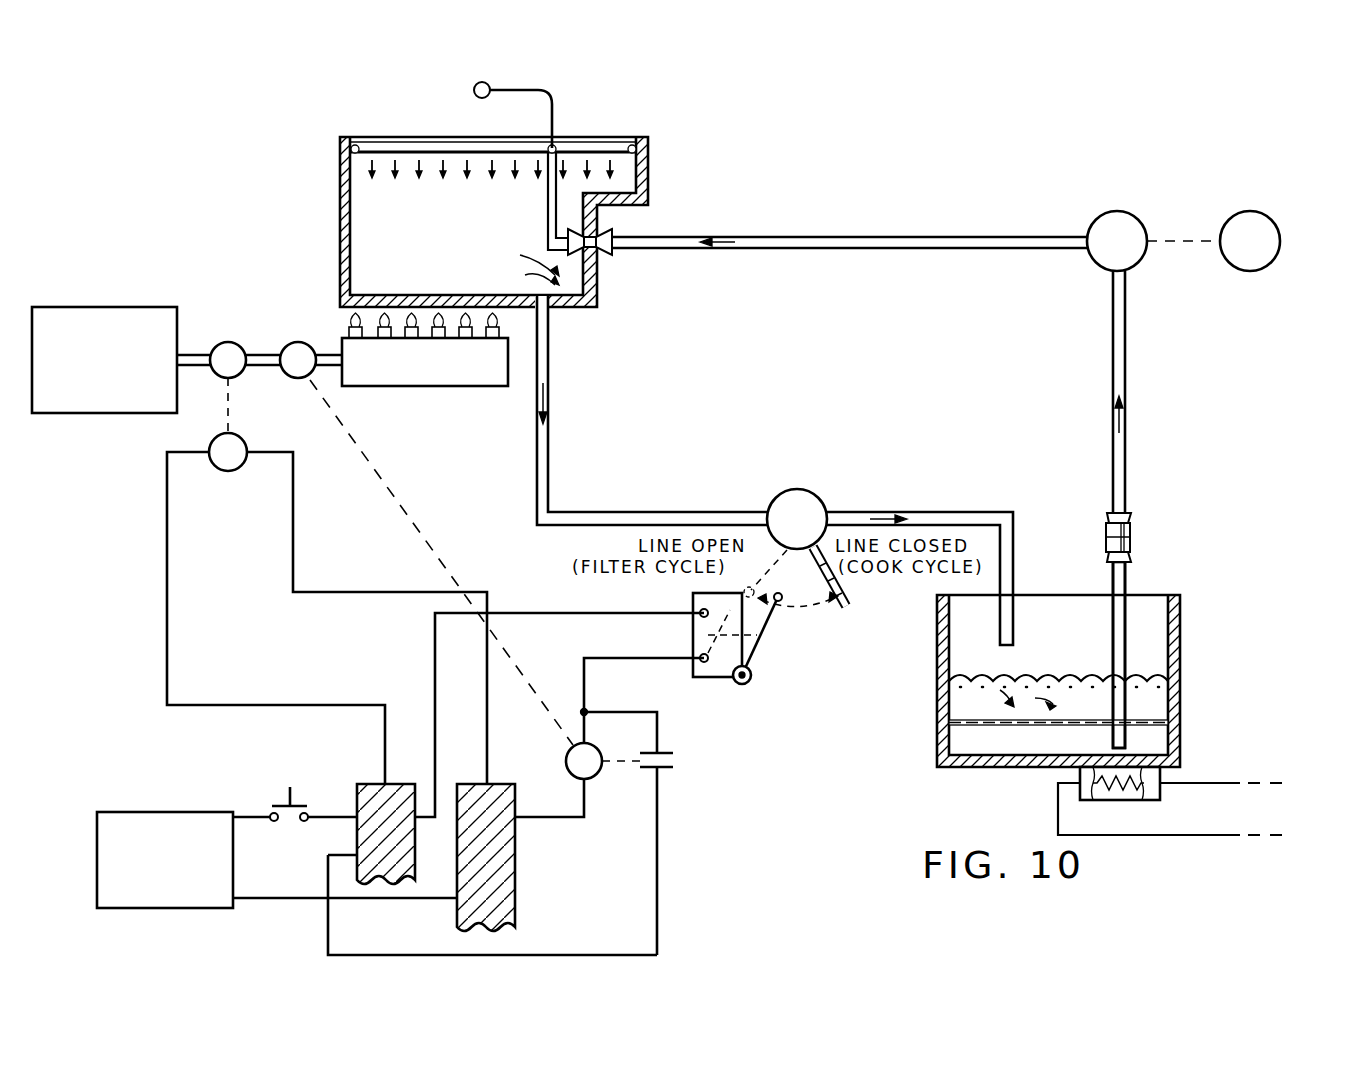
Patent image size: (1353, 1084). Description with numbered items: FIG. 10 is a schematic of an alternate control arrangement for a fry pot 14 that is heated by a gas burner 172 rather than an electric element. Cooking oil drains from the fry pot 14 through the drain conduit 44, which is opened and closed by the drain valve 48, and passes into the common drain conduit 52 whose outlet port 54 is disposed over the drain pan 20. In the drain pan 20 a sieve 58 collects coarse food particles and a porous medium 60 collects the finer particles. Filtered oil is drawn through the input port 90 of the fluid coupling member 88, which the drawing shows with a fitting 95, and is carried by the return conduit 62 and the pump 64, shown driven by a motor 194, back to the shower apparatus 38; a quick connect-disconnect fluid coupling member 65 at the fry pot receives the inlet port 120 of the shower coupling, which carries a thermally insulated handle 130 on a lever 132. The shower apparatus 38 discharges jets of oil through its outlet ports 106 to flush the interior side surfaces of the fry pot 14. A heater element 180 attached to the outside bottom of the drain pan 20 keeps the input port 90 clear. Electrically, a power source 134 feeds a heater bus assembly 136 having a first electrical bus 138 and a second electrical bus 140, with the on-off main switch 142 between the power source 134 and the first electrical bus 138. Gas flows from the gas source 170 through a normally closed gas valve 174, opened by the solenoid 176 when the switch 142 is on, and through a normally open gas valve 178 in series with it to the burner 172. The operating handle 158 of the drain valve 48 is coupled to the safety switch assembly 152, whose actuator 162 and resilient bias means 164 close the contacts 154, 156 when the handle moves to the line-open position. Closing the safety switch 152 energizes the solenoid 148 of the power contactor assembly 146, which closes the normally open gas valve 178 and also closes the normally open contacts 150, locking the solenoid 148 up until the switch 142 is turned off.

The fry pot unit 14 is at (340, 195).
The drain pan 20 is at (1181, 655).
The shower apparatus 38 is at (511, 125).
The drain conduit 44 is at (548, 393).
The drain valve 48 is at (818, 490).
The common drain conduit 52 is at (1014, 550).
The outlet port 54 is at (1013, 676).
The sieve 58 is at (1068, 674).
The porous medium 60 is at (1150, 722).
The return conduit 62 is at (812, 252).
The pump 64 is at (1140, 215).
The quick connect-disconnect fluid coupling member 65 is at (594, 258).
The fluid coupling member 88 is at (1131, 541).
The input port 90 is at (1125, 735).
The fitting 95 is at (1130, 530).
The outlet ports 106 is at (441, 150).
The inlet port 120 is at (566, 255).
The thermally insulated handle 130 is at (474, 88).
The lever 132 is at (553, 104).
The power source 134 is at (131, 812).
The heater bus assembly 136 is at (612, 944).
The first electrical bus 138 is at (404, 849).
The second electrical bus 140 is at (504, 849).
The on-off switch 142 is at (273, 808).
The power contactor assembly 146 is at (544, 749).
The solenoid assembly 148 is at (600, 778).
The normally open contacts 150 is at (676, 770).
The safety switch assembly 152 is at (826, 687).
The electrical contact 154 is at (699, 617).
The electrical contact 156 is at (699, 660).
The operating handle 158 is at (850, 606).
The actuator 162 is at (760, 637).
The resilient bias means 164 is at (736, 684).
The gas source 170 is at (152, 307).
The gas burner 172 is at (426, 386).
The normally closed gas valve 174 is at (238, 378).
The electrical solenoid assembly 176 is at (243, 465).
The normally open gas valve 178 is at (300, 378).
The heater element 180 is at (1160, 797).
The motor 194 is at (1262, 213).